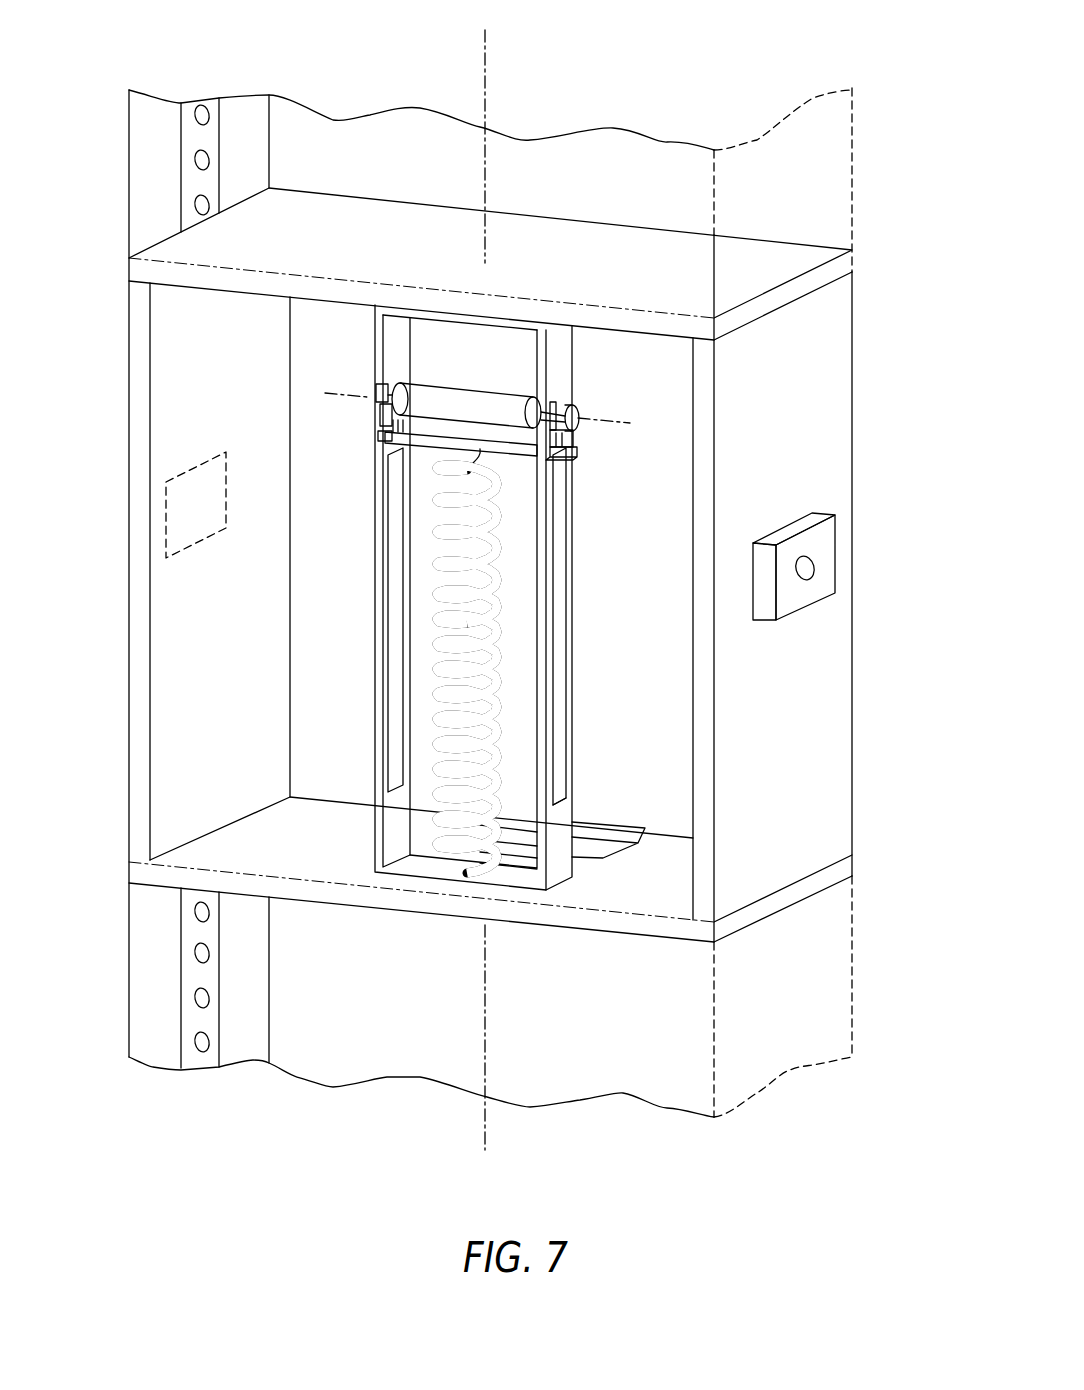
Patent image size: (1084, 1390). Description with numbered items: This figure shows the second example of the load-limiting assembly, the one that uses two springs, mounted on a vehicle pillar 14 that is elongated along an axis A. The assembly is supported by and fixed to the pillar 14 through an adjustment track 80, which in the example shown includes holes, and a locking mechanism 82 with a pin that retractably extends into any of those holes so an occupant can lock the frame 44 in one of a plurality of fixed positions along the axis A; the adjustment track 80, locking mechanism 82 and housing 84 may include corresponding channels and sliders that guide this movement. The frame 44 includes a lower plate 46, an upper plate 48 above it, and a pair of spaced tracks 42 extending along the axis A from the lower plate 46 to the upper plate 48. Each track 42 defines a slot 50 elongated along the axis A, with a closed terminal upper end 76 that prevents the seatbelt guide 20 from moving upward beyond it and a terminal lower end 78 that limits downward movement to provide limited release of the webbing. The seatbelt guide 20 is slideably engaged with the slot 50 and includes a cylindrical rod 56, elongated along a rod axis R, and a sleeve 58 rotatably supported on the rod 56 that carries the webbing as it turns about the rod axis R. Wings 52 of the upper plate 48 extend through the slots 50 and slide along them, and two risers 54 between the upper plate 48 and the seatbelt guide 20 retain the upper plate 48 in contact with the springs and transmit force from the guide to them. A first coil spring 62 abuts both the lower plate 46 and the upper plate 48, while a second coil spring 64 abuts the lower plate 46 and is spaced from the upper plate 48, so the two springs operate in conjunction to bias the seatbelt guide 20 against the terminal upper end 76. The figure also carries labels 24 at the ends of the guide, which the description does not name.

The vehicle pillar 14 is at (853, 172).
The adjustment track 80 is at (181, 163).
The locking mechanism 82 is at (157, 503).
The housing 84 is at (578, 928).
The frame 44 is at (623, 932).
The track 42 is at (375, 604).
The slot 50 is at (396, 543).
The terminal lower end 78 is at (560, 800).
The lower plate 46 is at (405, 862).
The upper plate 48 is at (420, 453).
The wing 52 is at (374, 437).
The riser 54 is at (373, 417).
The rod 56 is at (377, 388).
The sleeve 58 is at (460, 400).
The roller end 24 is at (408, 400).
The seatbelt guide 20 is at (577, 408).
The terminal upper end 76 is at (555, 402).
The first coil spring 62 is at (490, 540).
The second coil spring 64 is at (440, 718).
The axis A is at (484, 575).
The rod axis R is at (486, 416).